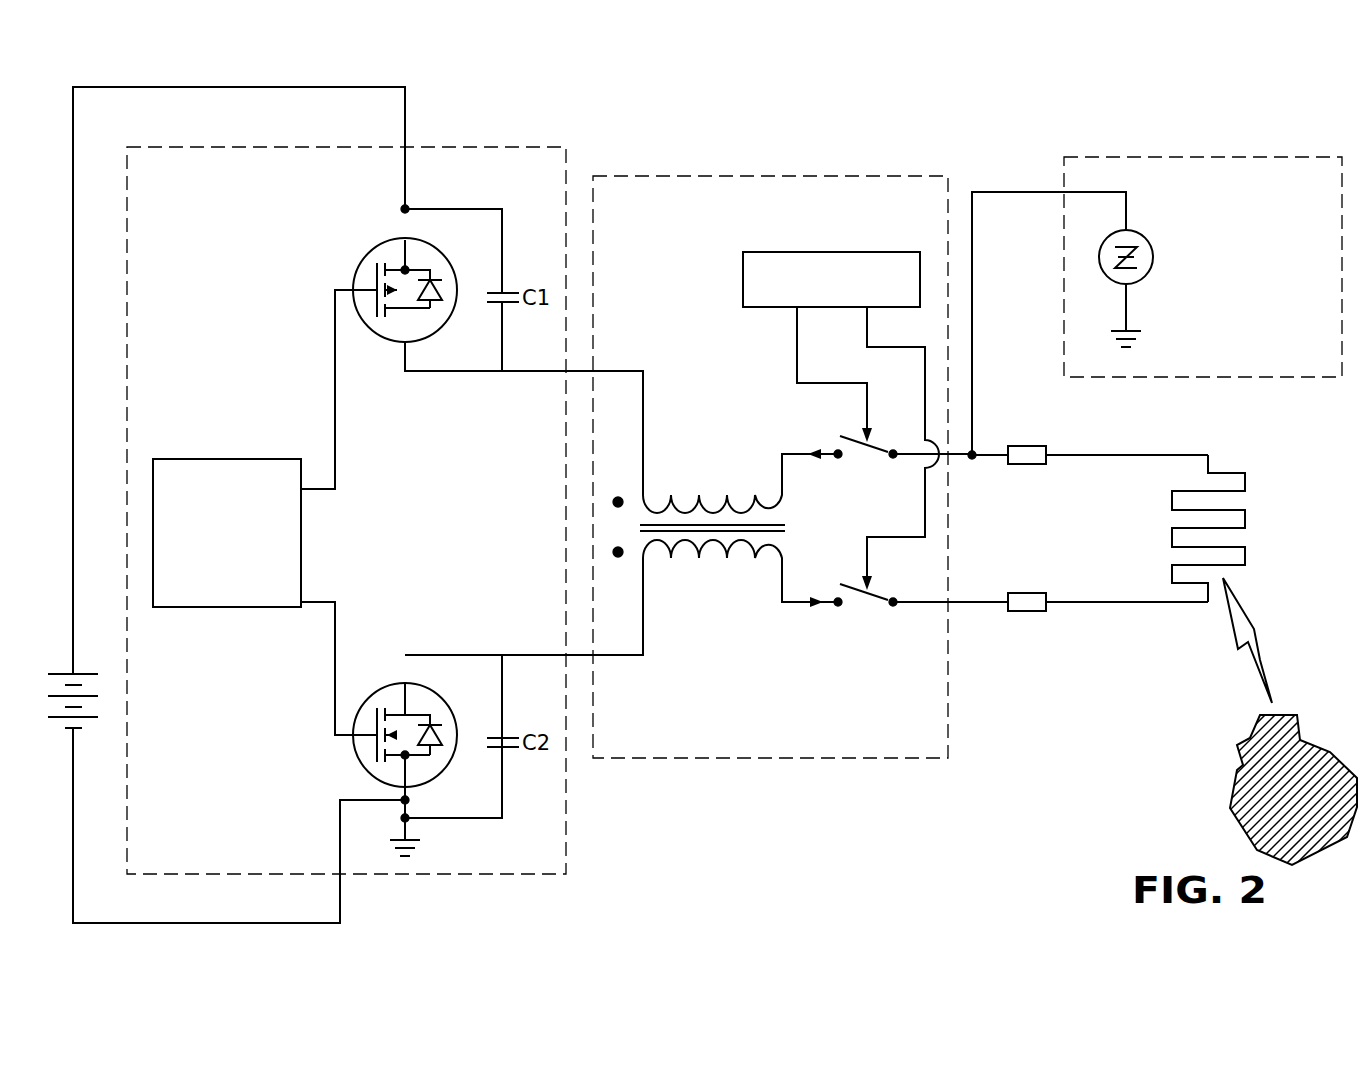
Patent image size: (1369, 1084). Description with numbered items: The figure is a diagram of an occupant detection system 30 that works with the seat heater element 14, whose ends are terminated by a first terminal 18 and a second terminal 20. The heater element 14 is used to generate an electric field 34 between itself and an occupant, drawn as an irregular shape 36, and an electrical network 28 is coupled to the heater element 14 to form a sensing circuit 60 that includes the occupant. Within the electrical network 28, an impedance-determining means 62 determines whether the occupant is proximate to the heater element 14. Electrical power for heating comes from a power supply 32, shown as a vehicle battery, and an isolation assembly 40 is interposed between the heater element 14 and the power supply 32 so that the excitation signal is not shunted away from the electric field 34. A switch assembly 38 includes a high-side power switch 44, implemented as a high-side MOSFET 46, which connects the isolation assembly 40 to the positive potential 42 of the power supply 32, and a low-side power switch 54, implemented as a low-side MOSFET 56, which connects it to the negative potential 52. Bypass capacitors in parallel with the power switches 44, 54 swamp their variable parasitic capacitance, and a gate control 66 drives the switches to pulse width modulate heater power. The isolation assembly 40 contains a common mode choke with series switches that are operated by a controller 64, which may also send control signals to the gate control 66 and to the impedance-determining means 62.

The heater element 14 is at (1236, 510).
The first terminal 18 is at (1033, 446).
The second terminal 20 is at (1033, 611).
The electrical network 28 is at (1237, 157).
The occupant detection system 30 is at (1175, 132).
The power supply 32 is at (88, 668).
The electric field 34 is at (1233, 613).
The occupant (irregular shape) 36 is at (1285, 715).
The switch assembly 38 is at (127, 243).
The isolation assembly 40 is at (778, 176).
The positive potential 42 is at (405, 186).
The power switch 44 is at (357, 263).
The high-side MOSFET 46 is at (433, 268).
The negative potential 52 is at (405, 818).
The power switch 54 is at (362, 755).
The low-side MOSFET 56 is at (438, 758).
The sensing circuit 60 is at (1061, 118).
The impedance-determining means 62 is at (1150, 230).
The controller 64 is at (895, 252).
The gate control 66 is at (258, 607).